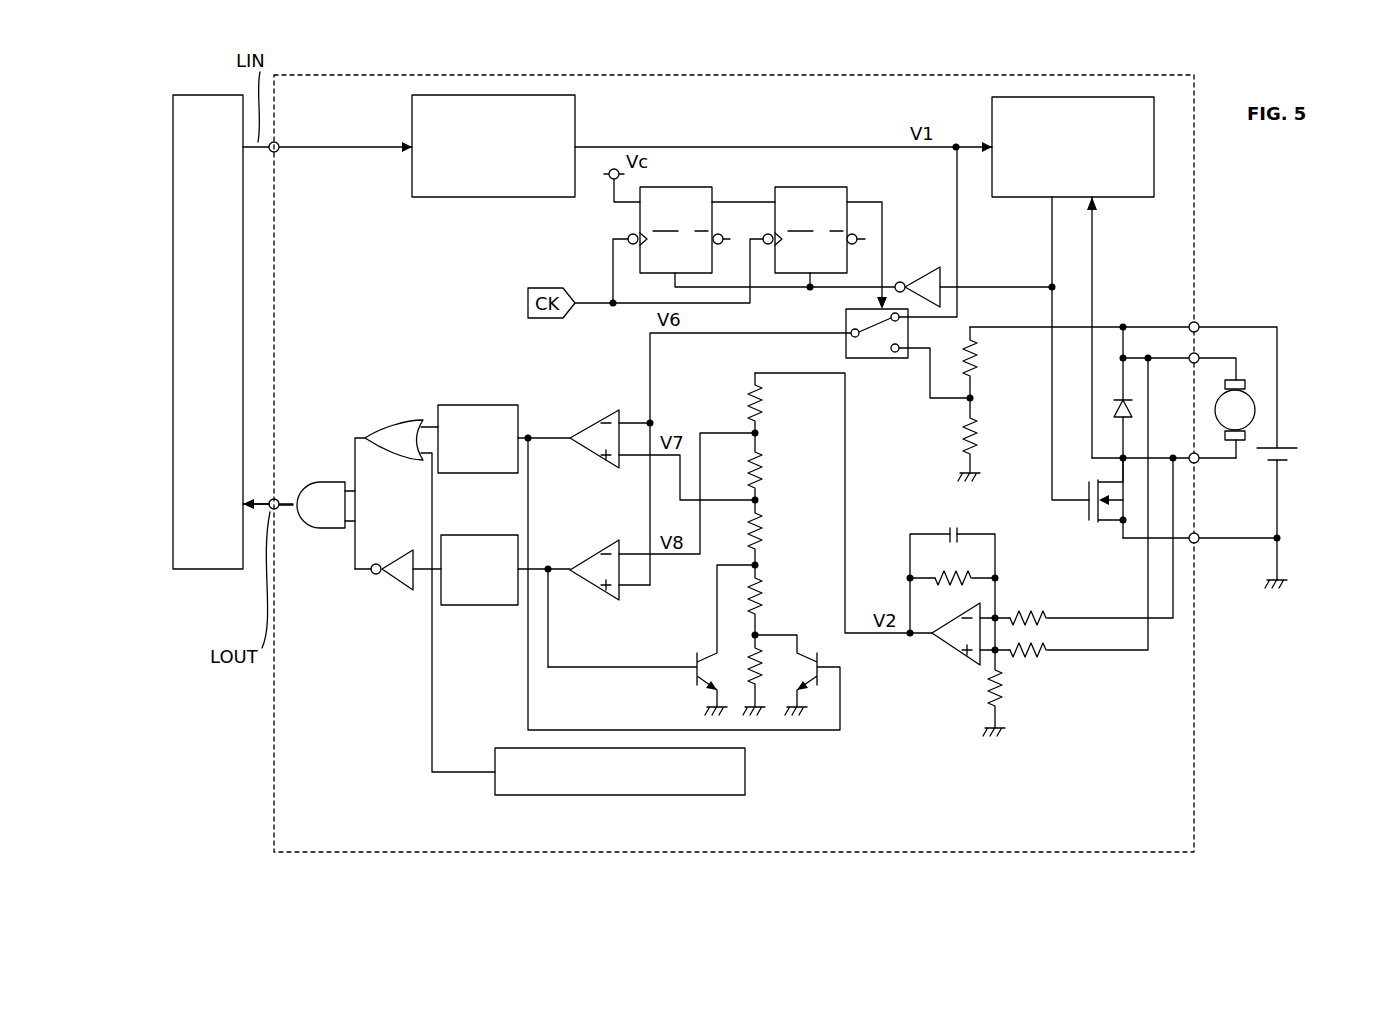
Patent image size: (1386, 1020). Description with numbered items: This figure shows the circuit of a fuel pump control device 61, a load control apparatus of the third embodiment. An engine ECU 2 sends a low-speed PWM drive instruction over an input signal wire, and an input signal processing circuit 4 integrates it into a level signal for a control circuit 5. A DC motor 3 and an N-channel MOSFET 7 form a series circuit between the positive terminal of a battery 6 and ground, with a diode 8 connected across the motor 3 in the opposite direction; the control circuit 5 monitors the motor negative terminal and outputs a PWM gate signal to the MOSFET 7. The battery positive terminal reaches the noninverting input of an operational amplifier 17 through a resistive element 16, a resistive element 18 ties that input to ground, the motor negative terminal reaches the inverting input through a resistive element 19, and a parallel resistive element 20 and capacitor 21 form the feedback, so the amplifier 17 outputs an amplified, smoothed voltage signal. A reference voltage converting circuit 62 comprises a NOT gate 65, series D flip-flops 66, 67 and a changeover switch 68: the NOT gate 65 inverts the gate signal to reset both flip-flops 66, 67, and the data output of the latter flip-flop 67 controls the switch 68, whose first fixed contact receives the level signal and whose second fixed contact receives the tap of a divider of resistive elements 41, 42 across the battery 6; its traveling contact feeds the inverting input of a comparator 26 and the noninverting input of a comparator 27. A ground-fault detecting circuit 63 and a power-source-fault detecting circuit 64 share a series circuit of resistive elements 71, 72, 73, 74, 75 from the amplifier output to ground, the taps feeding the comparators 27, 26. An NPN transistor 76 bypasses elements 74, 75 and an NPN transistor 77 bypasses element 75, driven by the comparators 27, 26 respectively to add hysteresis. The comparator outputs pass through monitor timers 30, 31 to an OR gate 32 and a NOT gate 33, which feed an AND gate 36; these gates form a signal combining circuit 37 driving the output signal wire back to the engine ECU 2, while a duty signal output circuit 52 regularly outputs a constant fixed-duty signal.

The engine ECU 2 is at (205, 95).
The DC motor 3 is at (1257, 412).
The input signal processing circuit 4 is at (578, 132).
The control circuit 5 is at (992, 125).
The battery 6 is at (1287, 446).
The N-channel MOSFET 7 is at (1092, 536).
The diode 8 is at (1115, 405).
The resistive element 16 is at (1040, 658).
The operational amplifier 17 is at (957, 652).
The resistive element 18 is at (1003, 702).
The resistive element 19 is at (1030, 610).
The resistive element 20 is at (960, 576).
The capacitor 21 is at (950, 527).
The comparator 26 is at (595, 412).
The comparator 27 is at (595, 600).
The monitor timer 30 is at (466, 405).
The monitor timer 31 is at (470, 606).
The OR gate 32 is at (384, 419).
The NOT gate 33 is at (397, 590).
The AND gate 36 is at (320, 532).
The signal combining circuit 37 is at (338, 470).
The resistive element 41 is at (988, 362).
The resistive element 42 is at (988, 440).
The duty signal output circuit 52 is at (626, 796).
The fuel pump control device 61 is at (693, 70).
The reference voltage converting circuit 62 is at (915, 230).
The ground-fault detecting circuit 63 is at (632, 388).
The power-source-fault detecting circuit 64 is at (628, 526).
The NOT gate 65 is at (933, 268).
The D flip-flop 66 is at (674, 187).
The D flip-flop 67 is at (810, 187).
The changeover switch 68 is at (846, 302).
The resistive element 71 is at (768, 402).
The resistive element 72 is at (768, 470).
The resistive element 73 is at (768, 535).
The resistive element 74 is at (768, 600).
The resistive element 75 is at (765, 666).
The NPN transistor 76 is at (694, 656).
The NPN transistor 77 is at (822, 667).